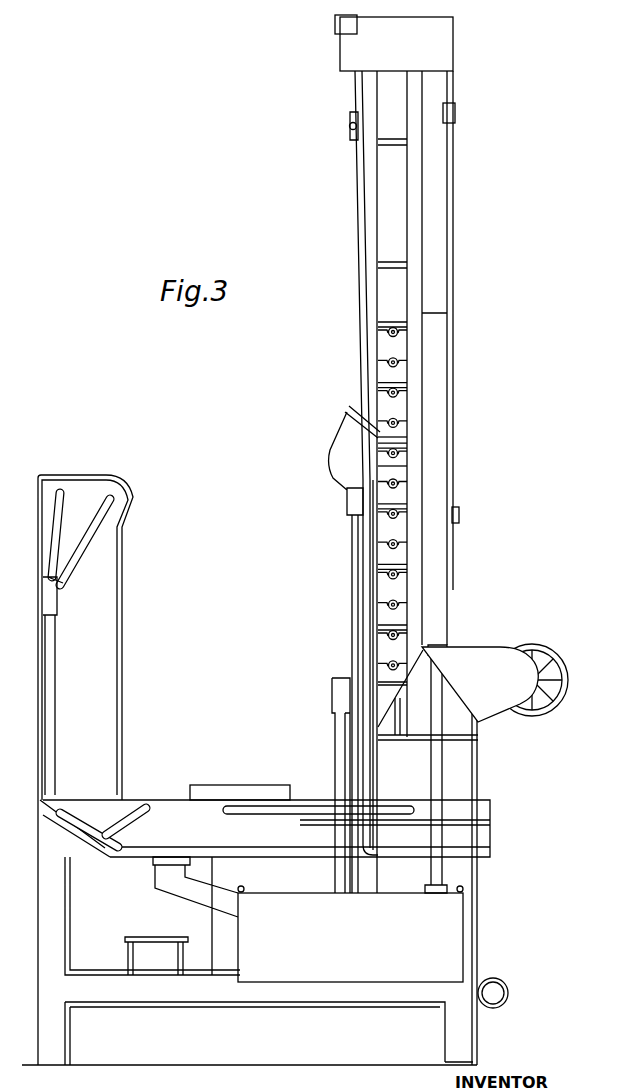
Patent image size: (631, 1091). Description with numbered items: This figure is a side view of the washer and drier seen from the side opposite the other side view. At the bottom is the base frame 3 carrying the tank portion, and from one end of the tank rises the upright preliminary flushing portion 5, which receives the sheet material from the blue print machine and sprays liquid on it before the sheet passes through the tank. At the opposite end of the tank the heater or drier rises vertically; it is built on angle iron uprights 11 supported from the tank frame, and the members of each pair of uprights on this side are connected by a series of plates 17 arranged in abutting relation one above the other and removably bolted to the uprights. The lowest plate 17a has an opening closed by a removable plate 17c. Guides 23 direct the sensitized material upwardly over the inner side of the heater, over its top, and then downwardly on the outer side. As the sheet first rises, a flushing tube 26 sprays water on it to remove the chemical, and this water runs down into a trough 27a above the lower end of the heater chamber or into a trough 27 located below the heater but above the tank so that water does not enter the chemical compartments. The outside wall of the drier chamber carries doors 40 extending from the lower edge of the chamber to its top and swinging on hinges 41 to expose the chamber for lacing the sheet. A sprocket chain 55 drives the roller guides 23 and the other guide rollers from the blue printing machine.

The base frame 3 is at (282, 996).
The preliminary flushing portion 5 is at (123, 700).
The angle iron uprights 11 is at (368, 172).
The plates 17 is at (390, 228).
The lowest plate 17a is at (402, 433).
The removable plate 17c is at (397, 470).
The guides 23 is at (350, 116).
The flushing tube 26 is at (352, 408).
The trough 27 is at (338, 689).
The trough 27a is at (342, 445).
The doors 40 is at (455, 348).
The hinges 41 is at (455, 110).
The sprocket chain 55 is at (355, 78).